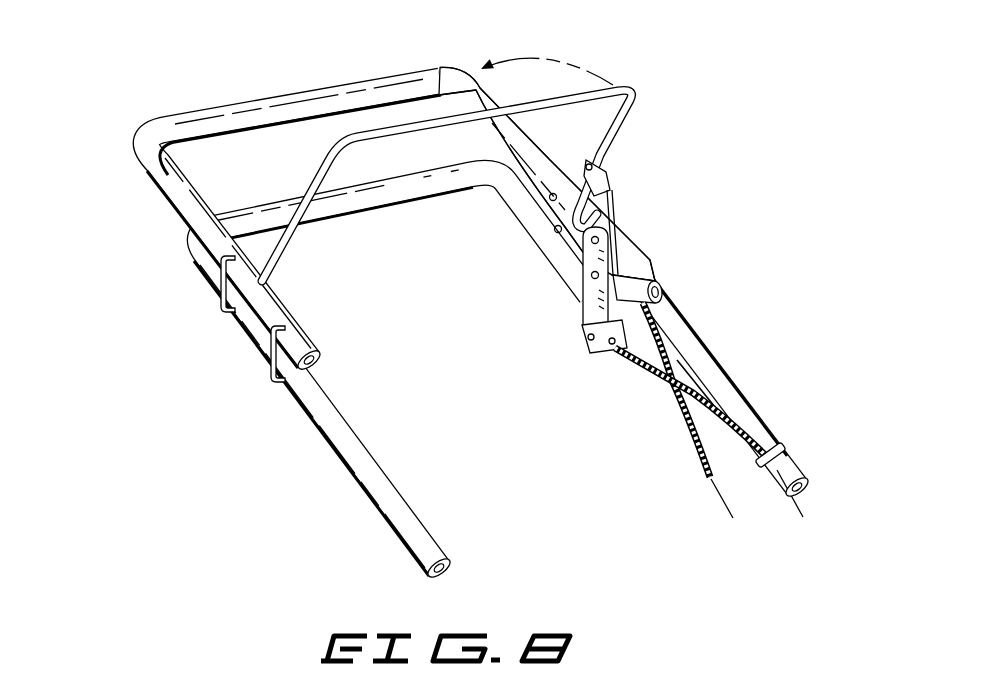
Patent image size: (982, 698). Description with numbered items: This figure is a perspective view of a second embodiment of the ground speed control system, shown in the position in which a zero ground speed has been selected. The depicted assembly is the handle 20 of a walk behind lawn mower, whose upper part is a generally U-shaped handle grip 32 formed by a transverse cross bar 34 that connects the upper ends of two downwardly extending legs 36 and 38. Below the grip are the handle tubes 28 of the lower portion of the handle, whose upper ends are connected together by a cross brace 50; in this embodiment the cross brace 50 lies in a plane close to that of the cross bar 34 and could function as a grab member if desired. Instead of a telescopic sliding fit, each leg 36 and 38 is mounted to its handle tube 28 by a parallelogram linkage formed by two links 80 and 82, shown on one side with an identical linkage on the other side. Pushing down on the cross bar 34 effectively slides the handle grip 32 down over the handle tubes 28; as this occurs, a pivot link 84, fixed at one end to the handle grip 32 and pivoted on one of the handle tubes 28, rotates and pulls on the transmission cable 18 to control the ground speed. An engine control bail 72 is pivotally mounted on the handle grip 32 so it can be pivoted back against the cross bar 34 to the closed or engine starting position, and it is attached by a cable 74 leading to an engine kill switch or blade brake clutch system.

The transmission cable 18 is at (623, 350).
The handle 20 is at (700, 305).
The handle tubes 28 is at (332, 425).
The handle grip 32 is at (282, 90).
The cross bar 34 is at (373, 80).
The leg 36 is at (177, 198).
The leg 38 is at (650, 262).
The cross brace 50 is at (362, 213).
The engine control bail 72 is at (642, 97).
The cable 74 is at (613, 205).
The link 80 is at (220, 292).
The link 82 is at (272, 362).
The pivot link 84 is at (583, 308).